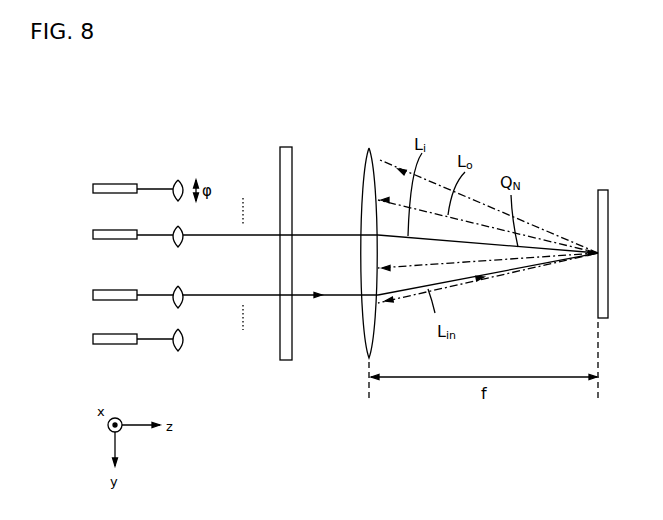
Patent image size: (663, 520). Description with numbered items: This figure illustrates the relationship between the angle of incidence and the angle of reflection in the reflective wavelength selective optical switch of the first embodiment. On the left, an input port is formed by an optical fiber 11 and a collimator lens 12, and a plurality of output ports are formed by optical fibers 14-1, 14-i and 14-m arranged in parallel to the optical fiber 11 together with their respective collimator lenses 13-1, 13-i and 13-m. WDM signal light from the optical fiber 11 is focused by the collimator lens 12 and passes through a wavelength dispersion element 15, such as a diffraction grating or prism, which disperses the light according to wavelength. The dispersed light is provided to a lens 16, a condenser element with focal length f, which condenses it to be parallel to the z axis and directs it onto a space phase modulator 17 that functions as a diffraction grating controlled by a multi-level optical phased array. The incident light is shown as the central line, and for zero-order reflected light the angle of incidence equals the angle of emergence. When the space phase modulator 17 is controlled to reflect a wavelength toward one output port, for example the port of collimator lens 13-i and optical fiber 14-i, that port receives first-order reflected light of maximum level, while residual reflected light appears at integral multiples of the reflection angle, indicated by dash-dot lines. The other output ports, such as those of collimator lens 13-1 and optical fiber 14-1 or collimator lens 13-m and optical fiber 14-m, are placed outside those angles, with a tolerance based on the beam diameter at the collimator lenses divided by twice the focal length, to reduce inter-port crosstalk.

The optical fiber 14-1 is at (110, 183).
The collimator lens 13-1 is at (173, 182).
The optical fiber 14-i is at (110, 230).
The collimator lens 13-i is at (170, 240).
The optical fiber 11 is at (92, 295).
The collimator lens 12 is at (173, 297).
The optical fiber 14-m is at (110, 345).
The collimator lens 13-m is at (173, 346).
The wavelength dispersion element 15 is at (294, 150).
The lens 16 is at (378, 153).
The space phase modulator 17 is at (598, 190).